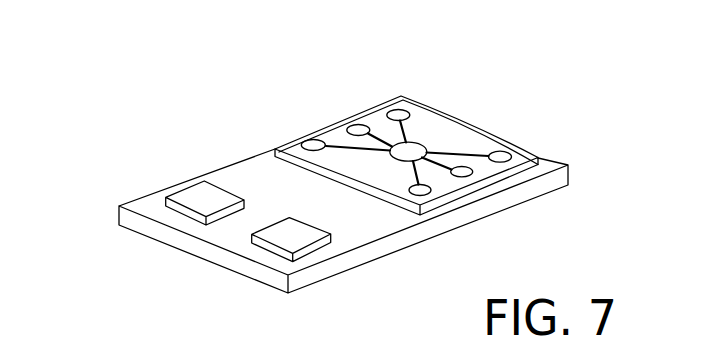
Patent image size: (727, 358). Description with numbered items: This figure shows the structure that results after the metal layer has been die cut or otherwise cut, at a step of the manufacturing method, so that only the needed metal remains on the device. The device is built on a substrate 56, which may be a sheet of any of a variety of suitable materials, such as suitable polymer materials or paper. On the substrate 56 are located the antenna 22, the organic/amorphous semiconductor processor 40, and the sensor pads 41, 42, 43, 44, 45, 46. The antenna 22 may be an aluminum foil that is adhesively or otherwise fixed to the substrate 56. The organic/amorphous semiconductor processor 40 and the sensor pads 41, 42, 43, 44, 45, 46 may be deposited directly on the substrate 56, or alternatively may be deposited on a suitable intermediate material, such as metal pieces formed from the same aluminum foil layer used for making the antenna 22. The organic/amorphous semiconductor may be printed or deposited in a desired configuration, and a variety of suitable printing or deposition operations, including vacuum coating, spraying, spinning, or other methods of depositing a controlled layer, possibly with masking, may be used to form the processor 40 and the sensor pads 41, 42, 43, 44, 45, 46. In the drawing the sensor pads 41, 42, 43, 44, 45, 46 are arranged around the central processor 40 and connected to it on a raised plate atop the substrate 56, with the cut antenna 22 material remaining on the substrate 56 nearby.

The antenna 22 is at (358, 221).
The substrate 56 is at (564, 178).
The sensor pad 42 is at (352, 117).
The sensor pad 41 is at (400, 96).
The organic/amorphous semiconductor processor 40 is at (419, 143).
The sensor pad 43 is at (302, 142).
The sensor pad 44 is at (509, 147).
The sensor pad 45 is at (473, 172).
The sensor pad 46 is at (413, 195).